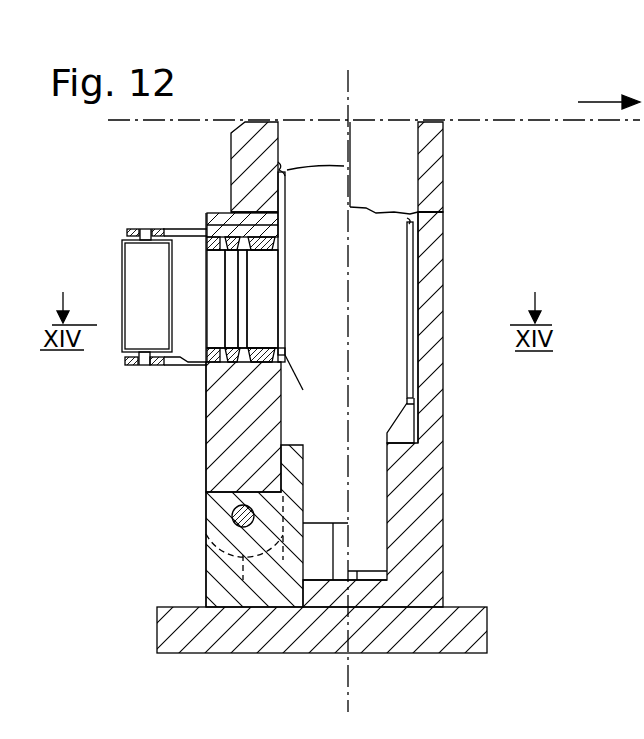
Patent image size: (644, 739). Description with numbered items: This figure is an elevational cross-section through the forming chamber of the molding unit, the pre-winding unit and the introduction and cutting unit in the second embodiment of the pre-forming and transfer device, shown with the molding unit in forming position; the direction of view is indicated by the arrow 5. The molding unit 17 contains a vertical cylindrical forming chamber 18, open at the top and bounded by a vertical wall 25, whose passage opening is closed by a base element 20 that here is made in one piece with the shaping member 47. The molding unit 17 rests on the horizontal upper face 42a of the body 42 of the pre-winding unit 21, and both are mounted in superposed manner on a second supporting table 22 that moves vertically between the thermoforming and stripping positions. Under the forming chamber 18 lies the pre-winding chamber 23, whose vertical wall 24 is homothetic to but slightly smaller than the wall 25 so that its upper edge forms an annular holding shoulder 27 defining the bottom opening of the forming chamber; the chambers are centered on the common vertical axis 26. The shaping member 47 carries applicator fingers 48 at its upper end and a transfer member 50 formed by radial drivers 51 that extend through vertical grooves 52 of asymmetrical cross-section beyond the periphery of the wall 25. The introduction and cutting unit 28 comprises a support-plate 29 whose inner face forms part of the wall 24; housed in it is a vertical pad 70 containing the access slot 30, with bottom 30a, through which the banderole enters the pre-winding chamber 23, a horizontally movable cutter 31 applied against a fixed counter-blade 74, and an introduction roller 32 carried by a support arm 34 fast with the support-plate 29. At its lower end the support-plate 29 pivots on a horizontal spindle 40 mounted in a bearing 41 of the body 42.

The direction arrow 5 is at (609, 89).
The molding unit 17 is at (253, 153).
The forming chamber 18 is at (398, 156).
The base element 20 is at (388, 213).
The pre-winding unit 21 is at (414, 513).
The second supporting table 22 is at (252, 640).
The pre-winding chamber 23 is at (420, 303).
The vertical wall 24 is at (404, 430).
The vertical wall 25 is at (421, 156).
The center axis 26 is at (350, 98).
The annular holding shoulder 27 is at (280, 208).
The introduction and transverse cutting unit 28 is at (200, 406).
The support-plate 29 is at (218, 455).
The access slot 30 is at (258, 299).
The bottom of access slot 30a is at (266, 346).
The cutter 31 is at (228, 270).
The introduction roller 32 is at (125, 281).
The support arm 34 is at (168, 370).
The horizontal spindle 40 is at (232, 517).
The bearing 41 is at (210, 547).
The body 42 is at (425, 589).
The horizontal upper face 42a is at (207, 213).
The shaping member 47 is at (322, 190).
The applicator finger 48 is at (282, 167).
The transfer member 50 is at (285, 354).
The radial driver 51 is at (410, 402).
The vertical groove 52 is at (415, 348).
The vertical pad 70 is at (285, 268).
The fixed counter-blade 74 is at (210, 322).